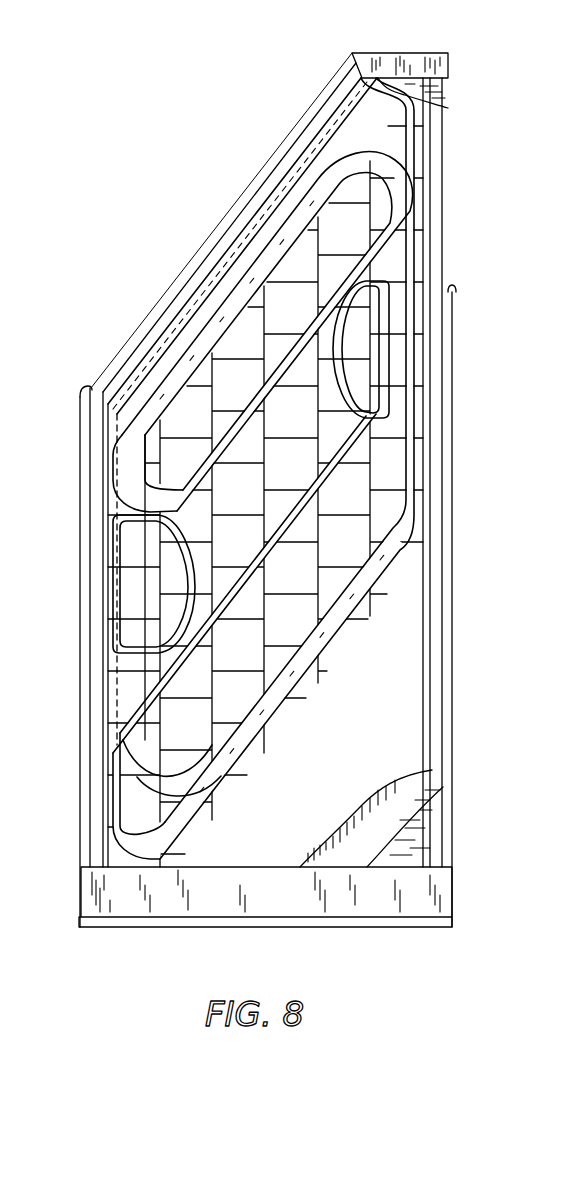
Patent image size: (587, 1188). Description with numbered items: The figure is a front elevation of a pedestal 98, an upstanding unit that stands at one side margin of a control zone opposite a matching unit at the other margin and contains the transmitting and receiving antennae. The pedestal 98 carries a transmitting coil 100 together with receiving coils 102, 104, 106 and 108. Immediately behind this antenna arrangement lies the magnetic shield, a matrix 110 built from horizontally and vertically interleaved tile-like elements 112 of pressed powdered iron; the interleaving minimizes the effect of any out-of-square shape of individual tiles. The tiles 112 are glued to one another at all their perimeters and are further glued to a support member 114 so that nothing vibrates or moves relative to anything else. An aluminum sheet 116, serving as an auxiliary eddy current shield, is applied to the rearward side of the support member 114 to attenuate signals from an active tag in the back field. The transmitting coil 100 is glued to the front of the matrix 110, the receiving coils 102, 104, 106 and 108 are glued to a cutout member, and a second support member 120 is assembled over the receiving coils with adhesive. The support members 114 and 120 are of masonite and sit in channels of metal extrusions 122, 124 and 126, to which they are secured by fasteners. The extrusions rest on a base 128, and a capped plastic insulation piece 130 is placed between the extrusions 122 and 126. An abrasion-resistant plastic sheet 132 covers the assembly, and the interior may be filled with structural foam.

The pedestal 98 is at (457, 181).
The transmitting coil 100 is at (205, 325).
The receiving coil 102 is at (345, 115).
The receiving coil 104 is at (423, 545).
The receiving coil 106 is at (128, 657).
The receiving coil 108 is at (404, 280).
The matrix 110 is at (356, 496).
The tile-like elements 112 is at (306, 416).
The support member 114 is at (405, 688).
The aluminum sheet 116 is at (410, 790).
The second support member 120 is at (420, 837).
The metal extrusion 122 is at (452, 503).
The metal extrusion 124 is at (100, 515).
The metal extrusion 126 is at (236, 202).
The base 128 is at (301, 893).
The capped plastic insulation piece 130 is at (428, 53).
The abrasion-resistant plastic sheet 132 is at (430, 90).